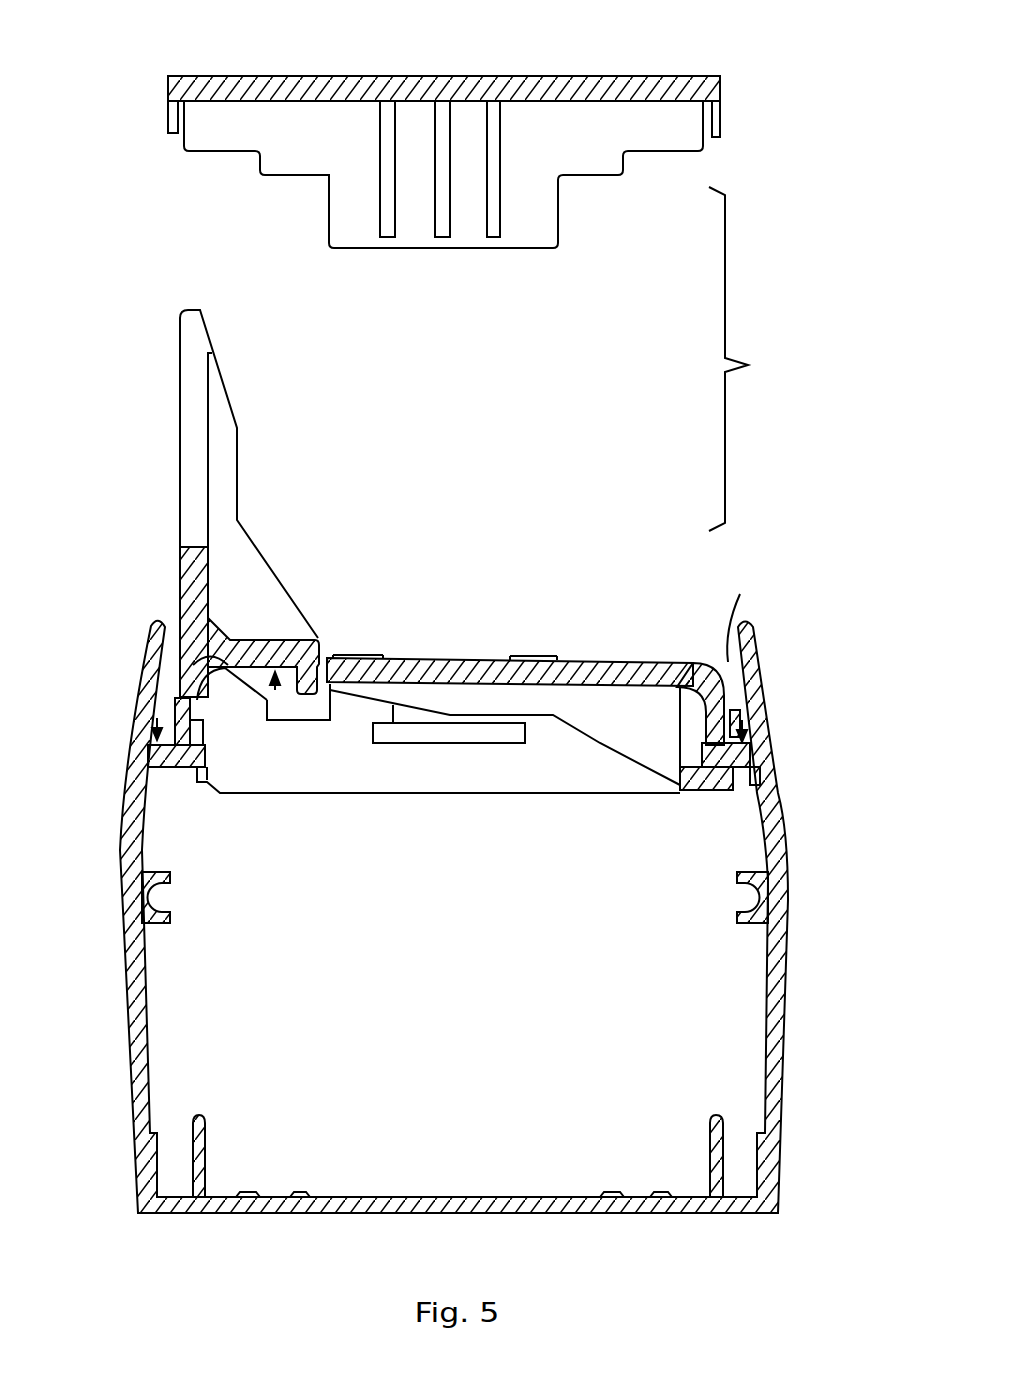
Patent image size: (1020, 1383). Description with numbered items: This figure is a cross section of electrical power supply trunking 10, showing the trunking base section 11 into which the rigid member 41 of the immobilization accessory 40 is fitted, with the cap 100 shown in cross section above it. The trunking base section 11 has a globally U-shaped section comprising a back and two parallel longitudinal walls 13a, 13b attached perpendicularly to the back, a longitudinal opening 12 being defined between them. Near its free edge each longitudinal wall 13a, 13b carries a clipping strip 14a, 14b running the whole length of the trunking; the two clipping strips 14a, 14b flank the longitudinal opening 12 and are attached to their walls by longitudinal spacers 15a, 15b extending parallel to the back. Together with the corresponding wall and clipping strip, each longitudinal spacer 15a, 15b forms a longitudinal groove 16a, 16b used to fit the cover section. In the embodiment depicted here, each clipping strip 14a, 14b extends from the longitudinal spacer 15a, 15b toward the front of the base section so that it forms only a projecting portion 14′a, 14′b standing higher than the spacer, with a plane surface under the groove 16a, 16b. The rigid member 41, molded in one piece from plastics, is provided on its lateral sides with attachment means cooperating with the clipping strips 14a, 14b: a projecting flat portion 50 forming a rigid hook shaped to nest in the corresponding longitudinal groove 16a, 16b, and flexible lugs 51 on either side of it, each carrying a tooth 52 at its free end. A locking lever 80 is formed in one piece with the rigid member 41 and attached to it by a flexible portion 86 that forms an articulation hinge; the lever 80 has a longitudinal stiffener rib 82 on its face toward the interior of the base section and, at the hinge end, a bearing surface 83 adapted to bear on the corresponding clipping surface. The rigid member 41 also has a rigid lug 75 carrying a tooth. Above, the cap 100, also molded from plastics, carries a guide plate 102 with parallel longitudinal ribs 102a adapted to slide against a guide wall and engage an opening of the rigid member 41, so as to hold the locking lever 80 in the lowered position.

The cap 100 is at (590, 66).
The guide plate 102 is at (662, 138).
The parallel longitudinal ribs 102a is at (392, 250).
The immobilization accessory 40 is at (758, 363).
The locking lever 80 is at (182, 404).
The longitudinal stiffener rib 82 is at (224, 440).
The rigid member 41 is at (600, 655).
The rigid lug 75 is at (369, 656).
The flexible portion 86 is at (716, 673).
The projecting flat portion 50 is at (176, 706).
The longitudinal groove 16b is at (152, 731).
The longitudinal groove 16a is at (760, 722).
The bearing surface 83 is at (331, 720).
The projecting portion 14′b is at (206, 745).
The clipping strip 14b is at (207, 746).
The longitudinal spacer 15b is at (133, 787).
The longitudinal spacer 15a is at (768, 790).
The tooth 52 is at (200, 785).
The flexible lug 51 is at (226, 796).
The clipping strip 14a is at (690, 762).
The projecting portion 14′a is at (696, 752).
The electrical power supply trunking 10 is at (793, 1010).
The longitudinal opening 12 is at (723, 660).
The longitudinal wall 13b is at (122, 1108).
The longitudinal wall 13a is at (790, 1090).
The trunking base section 11 is at (672, 1215).